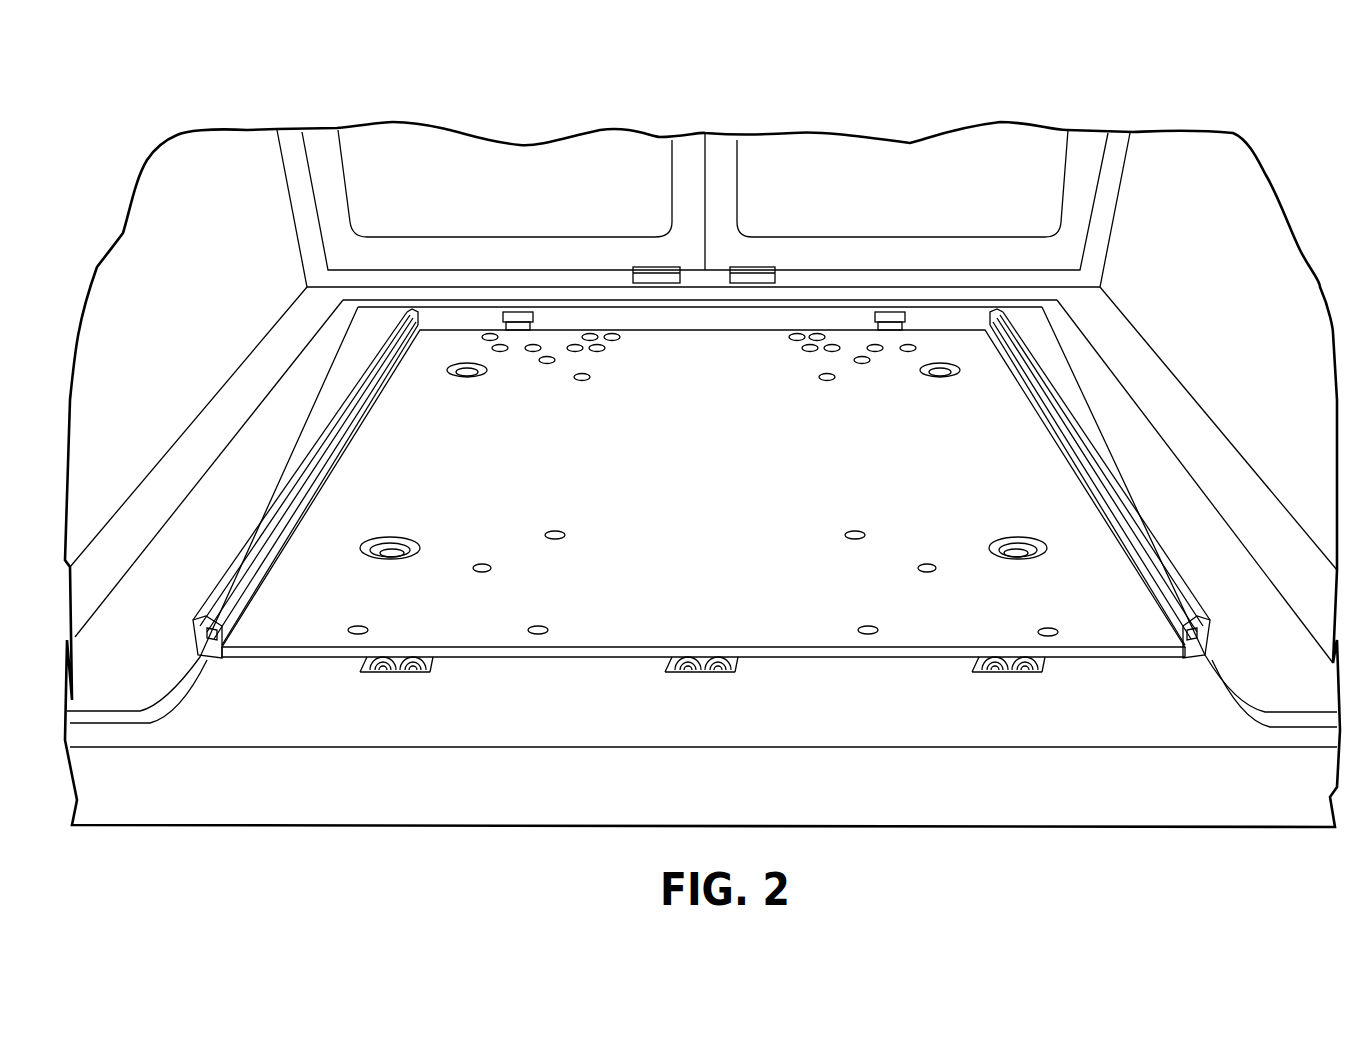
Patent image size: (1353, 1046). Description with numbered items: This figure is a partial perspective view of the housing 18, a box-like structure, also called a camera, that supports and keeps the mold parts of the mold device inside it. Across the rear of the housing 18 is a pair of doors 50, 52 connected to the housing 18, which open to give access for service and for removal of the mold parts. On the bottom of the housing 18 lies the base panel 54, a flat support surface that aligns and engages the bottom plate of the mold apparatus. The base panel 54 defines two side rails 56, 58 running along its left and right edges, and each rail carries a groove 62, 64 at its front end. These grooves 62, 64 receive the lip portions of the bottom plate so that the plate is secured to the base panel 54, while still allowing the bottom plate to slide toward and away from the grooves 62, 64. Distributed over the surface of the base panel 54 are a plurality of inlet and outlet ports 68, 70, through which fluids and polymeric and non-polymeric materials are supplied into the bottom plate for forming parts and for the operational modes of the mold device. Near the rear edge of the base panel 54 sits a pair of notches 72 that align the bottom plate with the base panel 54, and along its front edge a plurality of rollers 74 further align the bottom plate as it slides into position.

The housing 18 is at (181, 210).
The door 50 is at (500, 167).
The door 52 is at (909, 167).
The base panel 54 is at (700, 472).
The side rail 56 is at (231, 569).
The side rail 58 is at (1150, 537).
The groove 62 is at (212, 634).
The groove 64 is at (1205, 650).
The inlet port 68 is at (466, 382).
The outlet port 70 is at (557, 531).
The notch 72 is at (516, 330).
The roller 74 is at (385, 670).